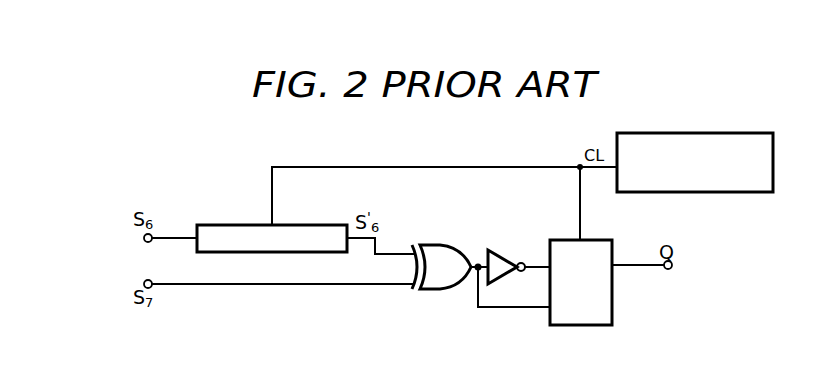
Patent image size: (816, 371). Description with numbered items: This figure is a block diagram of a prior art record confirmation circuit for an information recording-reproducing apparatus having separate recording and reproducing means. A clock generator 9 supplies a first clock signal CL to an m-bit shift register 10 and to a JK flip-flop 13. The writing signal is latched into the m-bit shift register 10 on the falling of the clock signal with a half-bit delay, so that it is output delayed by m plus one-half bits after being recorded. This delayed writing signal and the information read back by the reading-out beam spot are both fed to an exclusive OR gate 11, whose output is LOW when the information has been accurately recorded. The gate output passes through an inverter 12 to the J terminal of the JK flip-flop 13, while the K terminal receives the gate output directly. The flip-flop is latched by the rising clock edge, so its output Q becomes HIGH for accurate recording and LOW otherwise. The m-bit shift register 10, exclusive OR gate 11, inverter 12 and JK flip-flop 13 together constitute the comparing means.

The clock generator 9 is at (760, 133).
The m-bit shift register 10 is at (331, 225).
The exclusive OR gate 11 is at (456, 248).
The inverter 12 is at (506, 249).
The JK flip-flop 13 is at (597, 241).